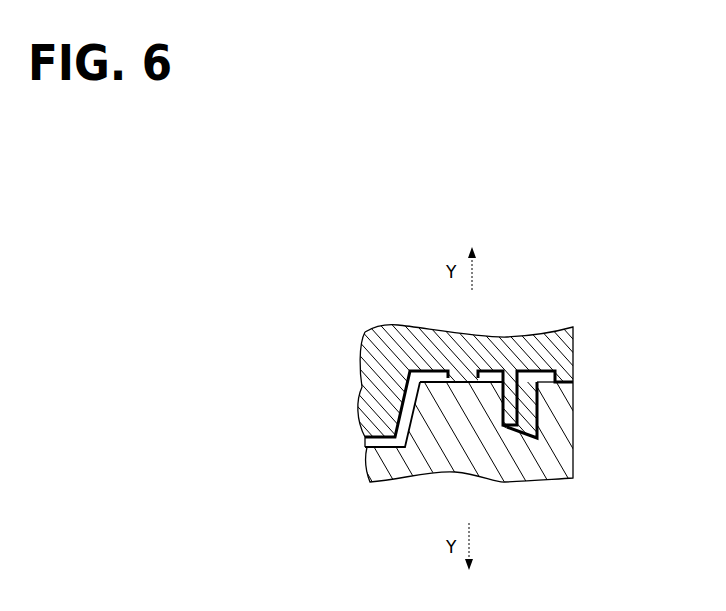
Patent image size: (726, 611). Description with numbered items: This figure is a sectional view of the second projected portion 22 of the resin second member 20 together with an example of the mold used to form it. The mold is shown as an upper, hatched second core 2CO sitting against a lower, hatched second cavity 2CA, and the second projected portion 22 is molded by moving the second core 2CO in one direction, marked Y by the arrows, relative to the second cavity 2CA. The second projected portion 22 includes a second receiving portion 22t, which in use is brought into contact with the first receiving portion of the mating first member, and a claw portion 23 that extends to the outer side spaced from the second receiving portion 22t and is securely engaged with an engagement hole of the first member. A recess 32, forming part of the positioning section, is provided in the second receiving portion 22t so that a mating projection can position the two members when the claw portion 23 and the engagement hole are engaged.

The second member 20 is at (363, 443).
The second projected portion 22 is at (546, 430).
The second receiving portion 22t is at (437, 384).
The claw portion 23 is at (513, 438).
The recess 32 is at (465, 375).
The second core 2CO is at (575, 338).
The second cavity 2CA is at (575, 412).